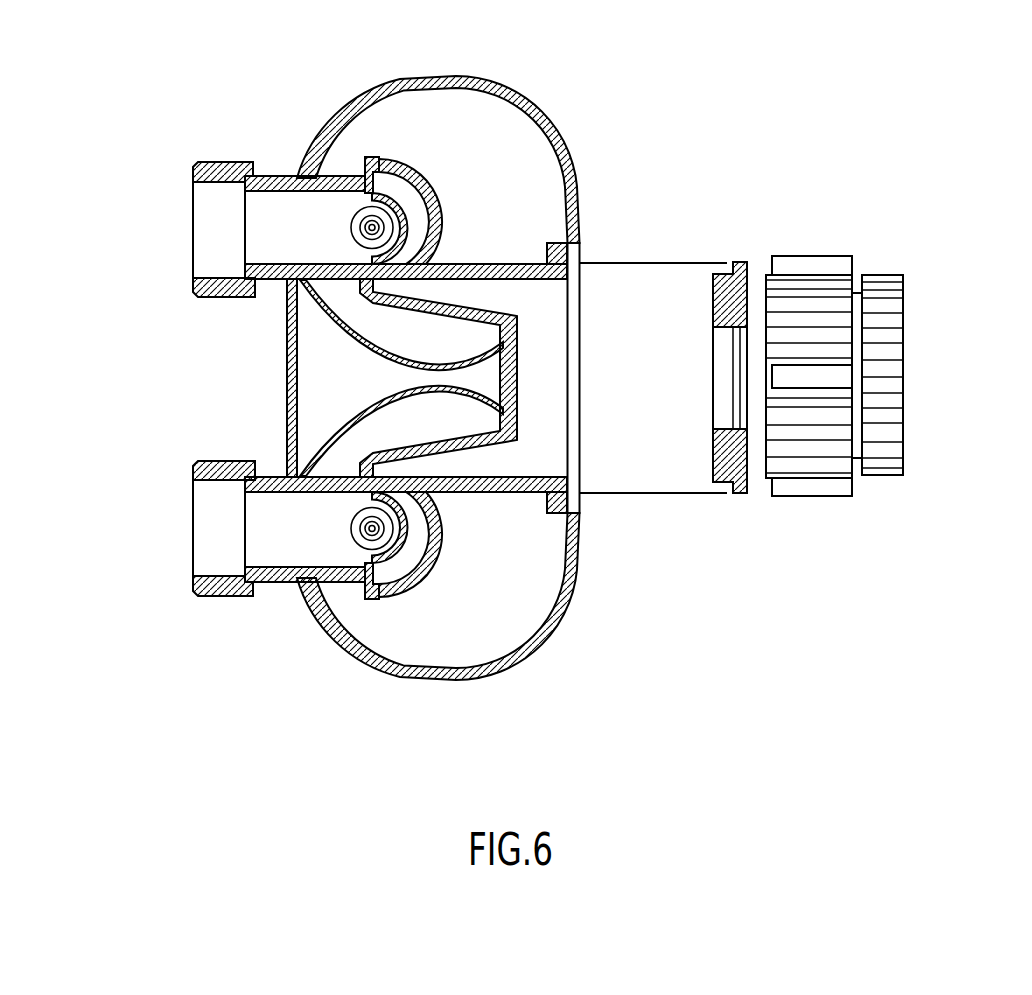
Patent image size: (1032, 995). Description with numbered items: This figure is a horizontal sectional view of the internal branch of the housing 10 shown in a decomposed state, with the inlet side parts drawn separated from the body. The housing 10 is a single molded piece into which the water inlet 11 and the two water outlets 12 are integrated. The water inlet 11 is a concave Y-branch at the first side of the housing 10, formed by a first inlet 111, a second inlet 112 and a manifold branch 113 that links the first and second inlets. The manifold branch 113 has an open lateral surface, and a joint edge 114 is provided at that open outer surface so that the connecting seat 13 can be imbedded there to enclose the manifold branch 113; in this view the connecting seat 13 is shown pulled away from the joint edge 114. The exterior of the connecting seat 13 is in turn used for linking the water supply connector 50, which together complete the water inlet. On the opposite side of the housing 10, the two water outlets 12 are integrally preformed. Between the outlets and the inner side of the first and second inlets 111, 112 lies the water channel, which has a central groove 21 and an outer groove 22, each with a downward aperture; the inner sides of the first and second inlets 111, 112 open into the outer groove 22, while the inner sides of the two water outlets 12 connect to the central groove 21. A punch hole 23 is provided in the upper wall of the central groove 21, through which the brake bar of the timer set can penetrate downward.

The housing 10 is at (507, 97).
The water inlet 11 is at (920, 265).
The water outlets 12 is at (217, 222).
The connecting seat 13 is at (731, 460).
The central groove 21 is at (390, 200).
The outer groove 22 is at (407, 193).
The punch hole 23 is at (365, 226).
The water supply connector 50 is at (808, 277).
The first inlet 111 is at (487, 293).
The second inlet 112 is at (472, 467).
The manifold branch 113 is at (540, 373).
The joint edge 114 is at (588, 263).